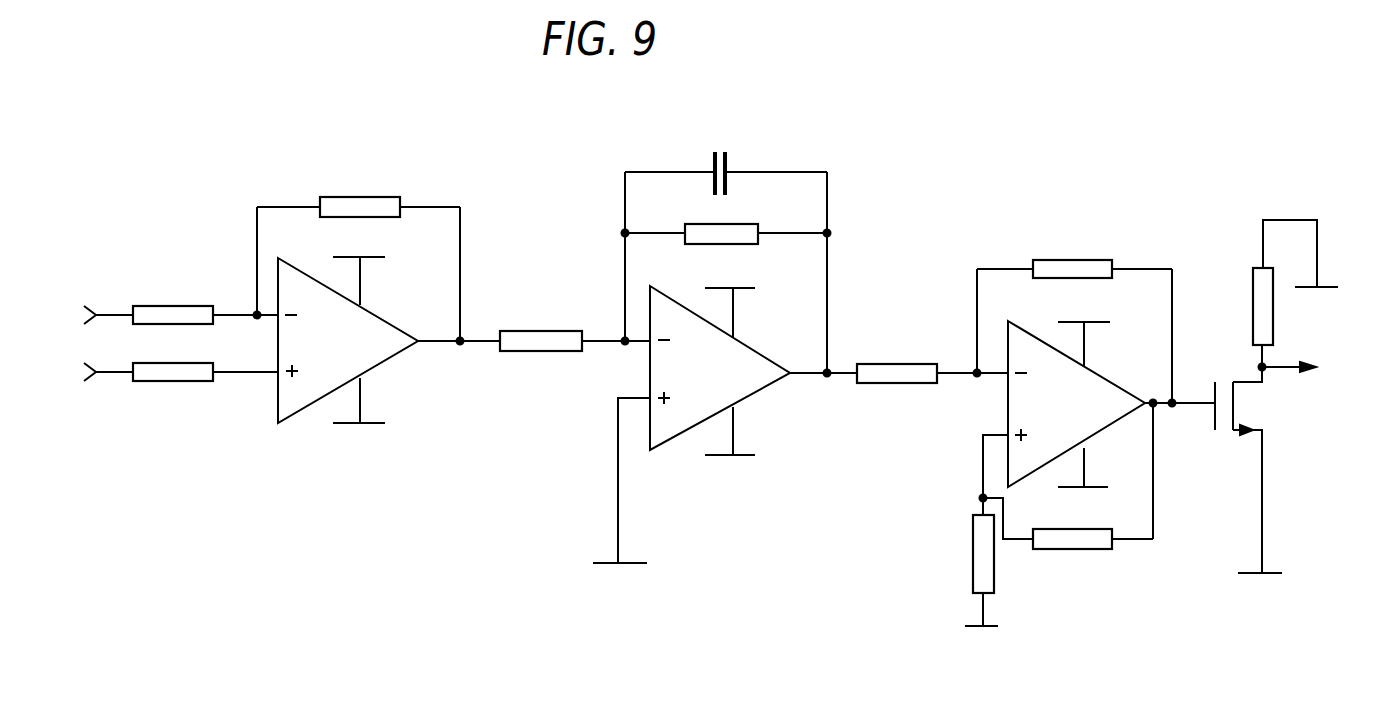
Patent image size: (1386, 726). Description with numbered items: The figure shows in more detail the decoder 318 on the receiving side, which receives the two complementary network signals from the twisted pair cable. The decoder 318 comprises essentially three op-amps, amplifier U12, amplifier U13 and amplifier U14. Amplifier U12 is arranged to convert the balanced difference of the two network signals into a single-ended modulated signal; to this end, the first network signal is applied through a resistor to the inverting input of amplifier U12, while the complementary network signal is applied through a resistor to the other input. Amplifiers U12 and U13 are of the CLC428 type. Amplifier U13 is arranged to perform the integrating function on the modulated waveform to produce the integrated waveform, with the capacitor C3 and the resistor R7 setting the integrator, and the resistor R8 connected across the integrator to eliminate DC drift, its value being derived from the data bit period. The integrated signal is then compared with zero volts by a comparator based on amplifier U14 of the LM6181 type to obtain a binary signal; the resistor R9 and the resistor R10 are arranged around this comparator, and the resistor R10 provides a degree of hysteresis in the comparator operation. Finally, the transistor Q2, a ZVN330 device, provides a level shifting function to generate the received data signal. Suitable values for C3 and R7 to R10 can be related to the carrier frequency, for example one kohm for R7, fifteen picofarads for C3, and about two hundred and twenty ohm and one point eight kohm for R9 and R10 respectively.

The decoder 318 is at (1128, 138).
The amplifier U12 is at (348, 341).
The amplifier U13 is at (720, 372).
The amplifier U14 is at (1076, 405).
The resistor R7 is at (541, 357).
The resistor R8 is at (726, 221).
The resistor R9 is at (964, 554).
The resistor R10 is at (1072, 554).
The capacitor C3 is at (726, 162).
The transistor Q2 is at (1253, 408).